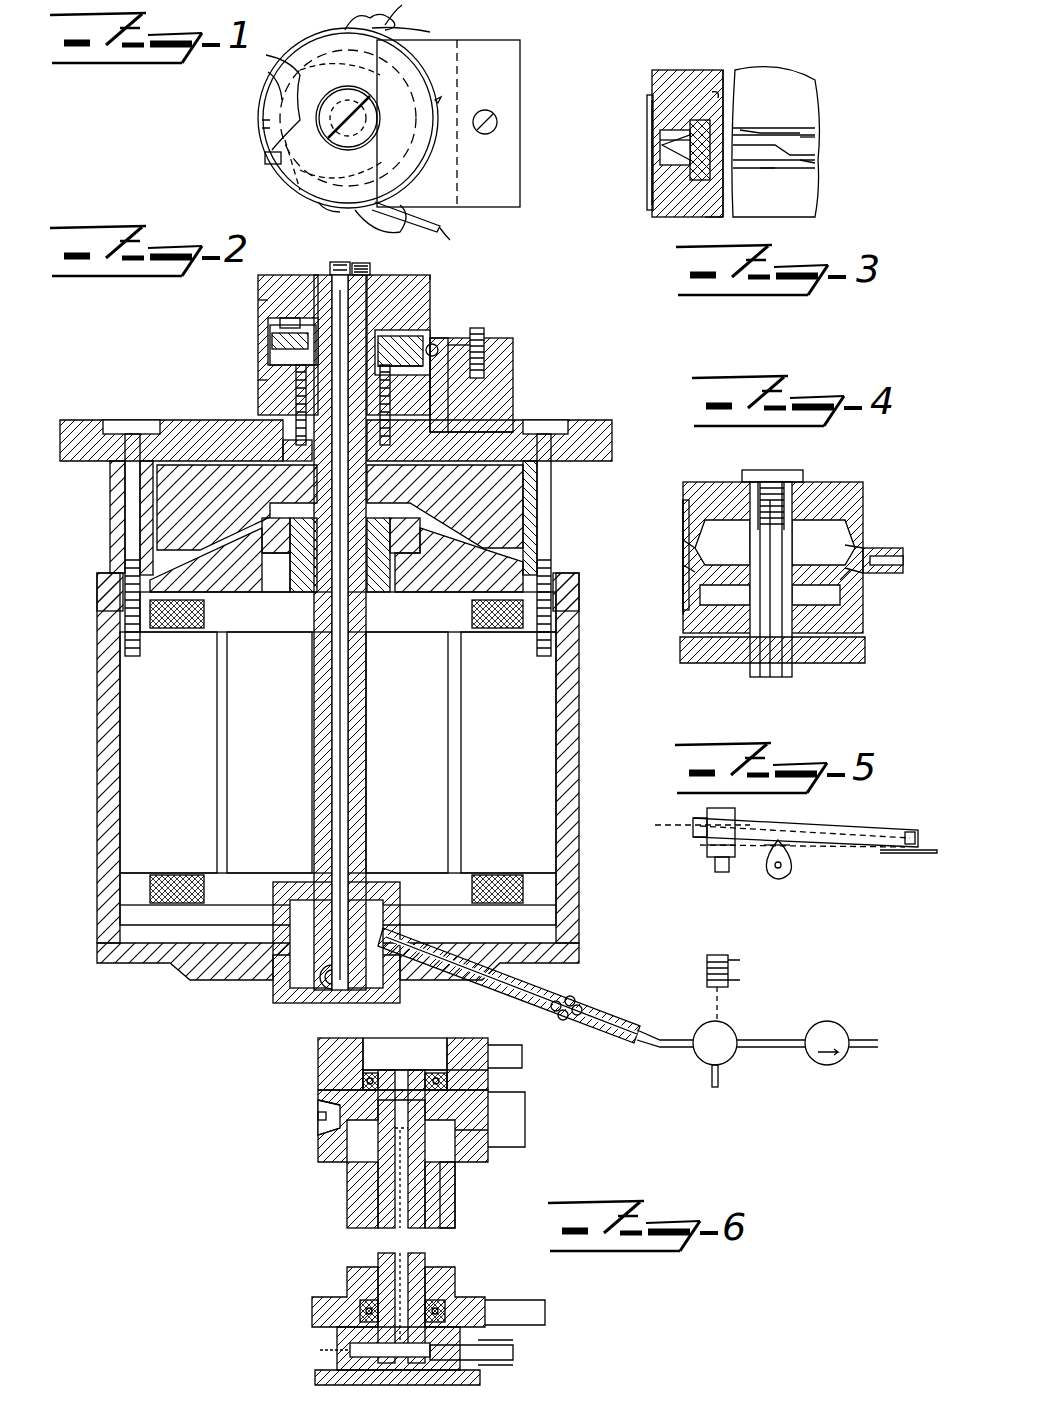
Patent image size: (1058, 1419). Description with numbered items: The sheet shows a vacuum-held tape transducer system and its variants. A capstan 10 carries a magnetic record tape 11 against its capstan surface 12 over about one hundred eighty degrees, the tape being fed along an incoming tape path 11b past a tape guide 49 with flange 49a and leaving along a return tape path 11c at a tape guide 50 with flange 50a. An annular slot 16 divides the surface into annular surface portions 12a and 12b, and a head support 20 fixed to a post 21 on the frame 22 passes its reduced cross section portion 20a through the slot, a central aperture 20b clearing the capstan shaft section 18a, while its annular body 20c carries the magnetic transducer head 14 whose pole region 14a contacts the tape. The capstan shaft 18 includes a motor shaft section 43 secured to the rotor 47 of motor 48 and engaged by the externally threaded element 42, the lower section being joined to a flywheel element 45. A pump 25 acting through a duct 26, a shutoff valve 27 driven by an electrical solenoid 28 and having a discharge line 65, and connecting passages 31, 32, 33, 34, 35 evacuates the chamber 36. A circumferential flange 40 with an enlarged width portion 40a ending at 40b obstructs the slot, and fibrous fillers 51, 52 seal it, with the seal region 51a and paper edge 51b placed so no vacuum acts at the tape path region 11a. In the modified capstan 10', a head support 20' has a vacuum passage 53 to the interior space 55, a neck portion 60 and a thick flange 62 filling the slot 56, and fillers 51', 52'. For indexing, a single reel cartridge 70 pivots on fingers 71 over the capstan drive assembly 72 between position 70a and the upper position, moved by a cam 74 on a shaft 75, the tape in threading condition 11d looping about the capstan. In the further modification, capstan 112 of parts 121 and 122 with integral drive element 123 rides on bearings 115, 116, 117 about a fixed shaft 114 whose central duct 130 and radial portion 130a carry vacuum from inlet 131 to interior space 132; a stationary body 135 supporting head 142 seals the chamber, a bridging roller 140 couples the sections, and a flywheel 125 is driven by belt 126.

In FIG. 1, the capstan 10 is at (462, 89).
In FIG. 3, the capstan 10 is at (734, 140).
In FIG. 2, the capstan 10 is at (456, 266).
In FIG. 4, the capstan 10' is at (787, 538).
In FIG. 1, the magnetic record tape 11 is at (305, 45).
In FIG. 3, the magnetic record tape 11 is at (648, 172).
In FIG. 4, the magnetic record tape 11 is at (680, 600).
In FIG. 1, the tape path region 11a is at (325, 212).
In FIG. 1, the incoming tape path 11b is at (445, 232).
In FIG. 1, the return tape path 11c is at (400, 12).
In FIG. 5, the tape in threading condition 11d is at (687, 821).
In FIG. 1, the capstan surface 12 is at (268, 180).
In FIG. 3, the capstan surface 12 is at (647, 100).
In FIG. 2, the capstan surface 12 is at (255, 282).
In FIG. 2, the annular surface portion 12a is at (258, 300).
In FIG. 5, the annular surface portion 12a is at (707, 812).
In FIG. 2, the annular surface portion 12b is at (258, 380).
In FIG. 5, the annular surface portion 12b is at (707, 848).
In FIG. 1, the magnetic transducer head 14 is at (265, 160).
In FIG. 2, the magnetic transducer head 14 is at (270, 352).
In FIG. 1, the pole region 14a is at (262, 125).
In FIG. 3, the pole region 14a is at (702, 135).
In FIG. 3, the annular slot 16 is at (660, 150).
In FIG. 2, the annular slot 16 is at (272, 338).
In FIG. 2, the capstan shaft 18 is at (368, 678).
In FIG. 2, the capstan shaft section 18a is at (270, 396).
In FIG. 1, the head support 20 is at (468, 114).
In FIG. 2, the head support 20 is at (507, 385).
In FIG. 4, the head support 20' is at (813, 622).
In FIG. 2, the reduced cross section portion 20a is at (512, 392).
In FIG. 2, the central aperture 20b is at (420, 318).
In FIG. 1, the annular body 20c is at (280, 86).
In FIG. 3, the annular body 20c is at (650, 200).
In FIG. 2, the annular body 20c is at (418, 332).
In FIG. 1, the post 21 is at (457, 176).
In FIG. 2, the post 21 is at (508, 418).
In FIG. 2, the frame 22 is at (598, 440).
In FIG. 2, the pump 25 is at (826, 1020).
In FIG. 2, the duct 26 is at (565, 1000).
In FIG. 2, the shutoff valve 27 is at (727, 1028).
In FIG. 2, the electrical solenoid 28 is at (705, 982).
In FIG. 2, the connecting passage 31 is at (292, 982).
In FIG. 2, the connecting passage 32 is at (322, 1000).
In FIG. 2, the connecting passage 33 is at (343, 765).
In FIG. 2, the connecting passage 34 is at (330, 268).
In FIG. 2, the connecting passage 35 is at (438, 348).
In FIG. 3, the chamber 36 is at (722, 90).
In FIG. 2, the chamber 36 is at (290, 318).
In FIG. 1, the circumferential flange 40 is at (262, 100).
In FIG. 3, the circumferential flange 40 is at (790, 132).
In FIG. 1, the enlarged width portion 40a is at (346, 74).
In FIG. 3, the enlarged width portion 40a is at (808, 155).
In FIG. 1, the end of enlarged flange portion 40b is at (342, 171).
In FIG. 3, the end of enlarged flange portion 40b is at (805, 138).
In FIG. 2, the externally threaded element 42 is at (372, 272).
In FIG. 2, the motor shaft section 43 is at (362, 714).
In FIG. 2, the flywheel element 45 is at (170, 507).
In FIG. 2, the rotor 47 is at (425, 734).
In FIG. 2, the motor 48 is at (552, 760).
In FIG. 1, the tape guide 49 is at (365, 230).
In FIG. 1, the flange 49a is at (420, 220).
In FIG. 1, the tape guide 50 is at (352, 24).
In FIG. 1, the flange 50a is at (440, 32).
In FIG. 3, the fibrous filler 51 is at (790, 118).
In FIG. 2, the fibrous filler 51 is at (517, 349).
In FIG. 4, the filler 51' is at (874, 524).
In FIG. 1, the seal region 51a is at (346, 110).
In FIG. 1, the edge of paper 51b is at (306, 165).
In FIG. 3, the edge of paper 51b is at (760, 128).
In FIG. 3, the fibrous filler 52 is at (790, 203).
In FIG. 2, the fibrous filler 52 is at (499, 364).
In FIG. 4, the filler 52' is at (875, 590).
In FIG. 4, the vacuum passage 53 is at (892, 548).
In FIG. 4, the interior space 55 is at (730, 520).
In FIG. 4, the slot 56 is at (684, 574).
In FIG. 4, the neck portion 60 is at (845, 575).
In FIG. 4, the flange 62 is at (685, 545).
In FIG. 2, the discharge line 65 is at (718, 1077).
In FIG. 5, the single reel cartridge 70 is at (845, 820).
In FIG. 5, the lower position 70a is at (827, 850).
In FIG. 5, the fingers 71 is at (918, 832).
In FIG. 5, the capstan drive assembly 72 is at (714, 865).
In FIG. 5, the cam 74 is at (765, 868).
In FIG. 5, the shaft 75 is at (775, 878).
In FIG. 6, the capstan 112 is at (313, 1072).
In FIG. 6, the fixed shaft 114 is at (378, 1238).
In FIG. 6, the bearing 115 is at (452, 1300).
In FIG. 6, the bearing 116 is at (456, 1170).
In FIG. 6, the bearing 117 is at (405, 1068).
In FIG. 6, the capstan part 121 is at (478, 1030).
In FIG. 6, the capstan part 122 is at (492, 1158).
In FIG. 6, the integral drive element 123 is at (457, 1200).
In FIG. 6, the flywheel 125 is at (330, 1300).
In FIG. 6, the belt 126 is at (510, 1058).
In FIG. 6, the central duct 130 is at (410, 1268).
In FIG. 6, the radial duct portion 130a is at (405, 1070).
In FIG. 6, the vacuum inlet 131 is at (482, 1360).
In FIG. 6, the interior space 132 is at (318, 1150).
In FIG. 6, the stationary body 135 is at (325, 1100).
In FIG. 6, the bridging roller 140 is at (515, 1118).
In FIG. 6, the head 142 is at (318, 1118).